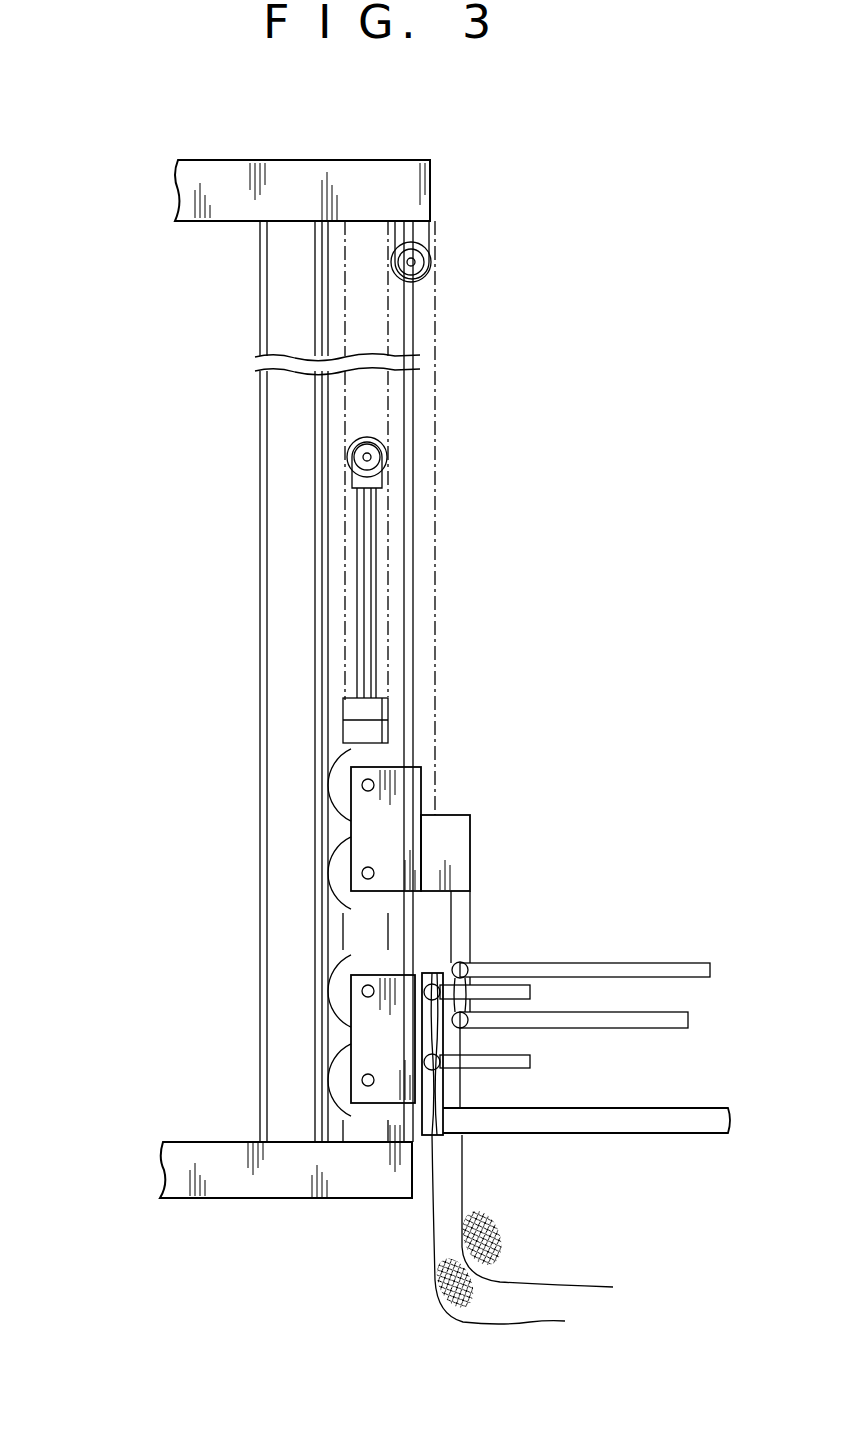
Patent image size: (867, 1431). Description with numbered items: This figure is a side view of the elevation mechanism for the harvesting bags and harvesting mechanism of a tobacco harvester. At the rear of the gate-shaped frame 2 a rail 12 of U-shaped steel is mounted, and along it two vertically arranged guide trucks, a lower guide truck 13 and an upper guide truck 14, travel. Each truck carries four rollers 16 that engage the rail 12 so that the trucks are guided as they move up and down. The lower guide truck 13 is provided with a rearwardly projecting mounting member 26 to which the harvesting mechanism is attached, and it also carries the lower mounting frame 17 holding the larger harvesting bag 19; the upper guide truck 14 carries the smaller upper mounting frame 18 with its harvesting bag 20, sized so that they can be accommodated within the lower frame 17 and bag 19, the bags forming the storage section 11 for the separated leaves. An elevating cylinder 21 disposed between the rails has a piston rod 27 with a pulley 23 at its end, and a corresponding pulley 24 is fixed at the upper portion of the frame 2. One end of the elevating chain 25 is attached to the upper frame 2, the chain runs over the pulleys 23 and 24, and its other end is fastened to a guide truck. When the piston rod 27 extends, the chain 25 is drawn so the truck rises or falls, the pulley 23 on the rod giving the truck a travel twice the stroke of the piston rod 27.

The frame 2 is at (365, 170).
The storage section 11 is at (400, 1276).
The rails 12 is at (408, 533).
The lower guide truck 13 is at (367, 1101).
The upper guide truck 14 is at (403, 807).
The rollers 16 is at (335, 873).
The lower mounting frame 17 is at (517, 990).
The upper mounting frame 18 is at (647, 970).
The harvesting bag 19 is at (540, 1312).
The harvesting bag 20 is at (578, 1278).
The elevating cylinder 21 is at (357, 728).
The pulley 23 is at (387, 450).
The pulley 24 is at (433, 262).
The elevating chain 25 is at (435, 370).
The mounting member 26 is at (670, 1120).
The piston rod 27 is at (367, 562).